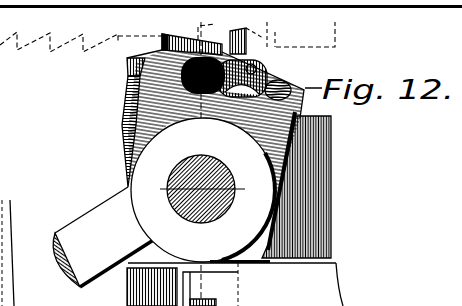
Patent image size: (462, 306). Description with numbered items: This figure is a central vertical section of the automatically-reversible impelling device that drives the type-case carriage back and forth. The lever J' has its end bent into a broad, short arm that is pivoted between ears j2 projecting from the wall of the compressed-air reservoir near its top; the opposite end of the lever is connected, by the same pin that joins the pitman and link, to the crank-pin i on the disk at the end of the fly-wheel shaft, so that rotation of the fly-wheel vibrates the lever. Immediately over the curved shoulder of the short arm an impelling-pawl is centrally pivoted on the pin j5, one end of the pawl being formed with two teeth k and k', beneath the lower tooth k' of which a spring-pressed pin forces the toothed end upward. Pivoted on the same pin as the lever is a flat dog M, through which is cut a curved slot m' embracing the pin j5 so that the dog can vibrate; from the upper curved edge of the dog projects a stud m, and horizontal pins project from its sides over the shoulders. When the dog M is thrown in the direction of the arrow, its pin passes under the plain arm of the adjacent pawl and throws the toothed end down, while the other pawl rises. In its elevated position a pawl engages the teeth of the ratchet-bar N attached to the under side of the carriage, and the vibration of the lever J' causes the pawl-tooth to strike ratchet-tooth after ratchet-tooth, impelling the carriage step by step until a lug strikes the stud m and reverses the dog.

The ratchet-bar N is at (167, 37).
The tooth k is at (192, 39).
The lower tooth k' is at (72, 125).
The crank-pin i is at (96, 103).
The stud m is at (258, 62).
The curved slot m' is at (305, 93).
The flat dog M is at (215, 87).
The lever J' is at (104, 237).
The ear j2 is at (235, 211).
The pin j5 is at (210, 289).